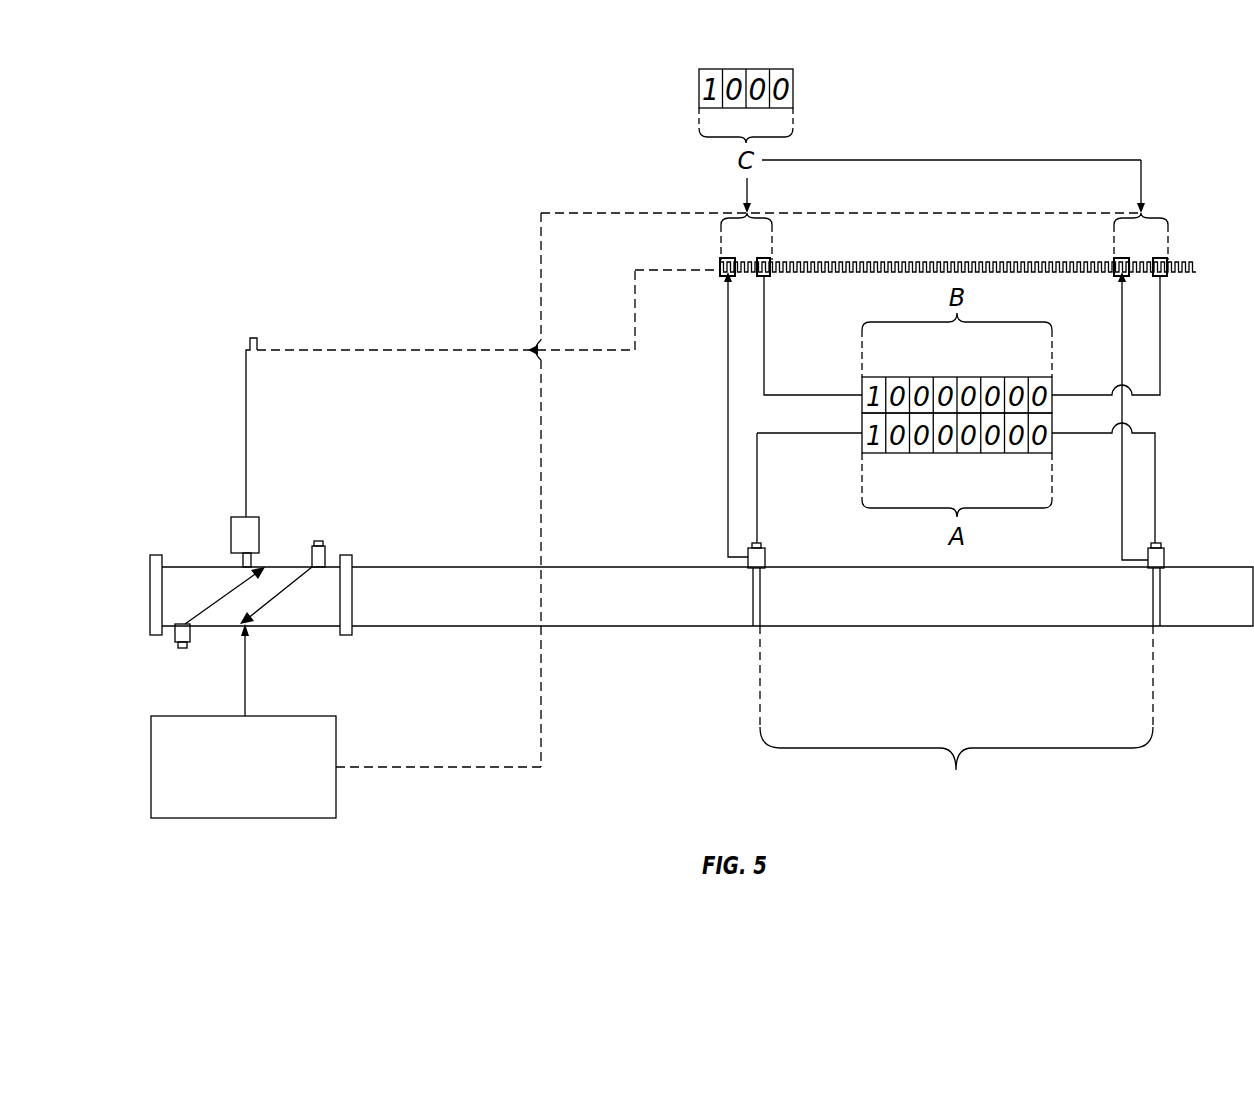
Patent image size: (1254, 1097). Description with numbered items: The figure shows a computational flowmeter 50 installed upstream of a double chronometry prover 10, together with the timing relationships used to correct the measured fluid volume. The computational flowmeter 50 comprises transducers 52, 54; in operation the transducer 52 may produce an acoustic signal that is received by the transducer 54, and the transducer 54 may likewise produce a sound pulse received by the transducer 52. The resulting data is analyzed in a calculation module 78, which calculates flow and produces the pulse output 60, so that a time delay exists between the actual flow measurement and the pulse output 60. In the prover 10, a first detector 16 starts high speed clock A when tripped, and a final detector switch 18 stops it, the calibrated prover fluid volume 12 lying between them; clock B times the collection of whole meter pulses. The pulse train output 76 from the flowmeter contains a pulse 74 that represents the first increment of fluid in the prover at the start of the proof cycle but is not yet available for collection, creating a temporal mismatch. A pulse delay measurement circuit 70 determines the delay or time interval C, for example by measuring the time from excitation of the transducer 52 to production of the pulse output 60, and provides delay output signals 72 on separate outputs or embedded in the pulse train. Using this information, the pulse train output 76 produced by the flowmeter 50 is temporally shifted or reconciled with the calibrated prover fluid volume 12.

The prover 10 is at (1068, 643).
The calibrated prover fluid volume 12 is at (956, 715).
The first detector 16 is at (767, 560).
The final detector switch 18 is at (1166, 560).
The computational flowmeter 50 is at (165, 535).
The transducer 52 is at (175, 633).
The transducer 54 is at (326, 558).
The pulse output 60 is at (255, 340).
The pulse delay measurement circuit 70 is at (178, 715).
The delay output signal 72 is at (541, 737).
The pulse 74 is at (720, 275).
The pulse train output 76 is at (940, 260).
The calculation module 78 is at (231, 535).